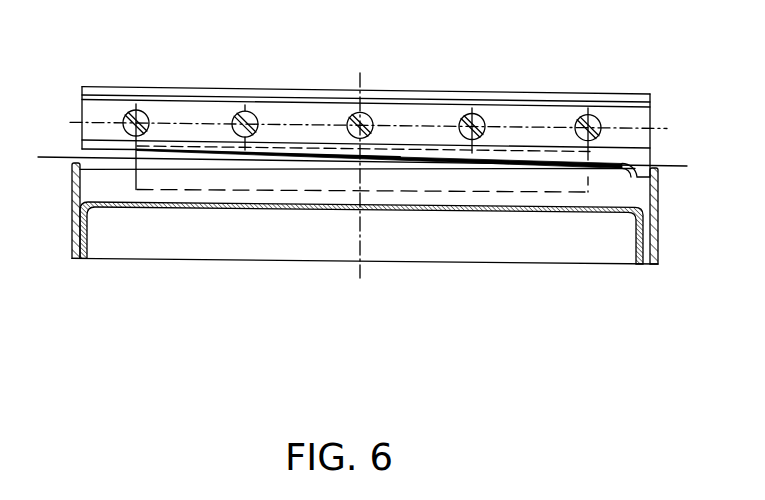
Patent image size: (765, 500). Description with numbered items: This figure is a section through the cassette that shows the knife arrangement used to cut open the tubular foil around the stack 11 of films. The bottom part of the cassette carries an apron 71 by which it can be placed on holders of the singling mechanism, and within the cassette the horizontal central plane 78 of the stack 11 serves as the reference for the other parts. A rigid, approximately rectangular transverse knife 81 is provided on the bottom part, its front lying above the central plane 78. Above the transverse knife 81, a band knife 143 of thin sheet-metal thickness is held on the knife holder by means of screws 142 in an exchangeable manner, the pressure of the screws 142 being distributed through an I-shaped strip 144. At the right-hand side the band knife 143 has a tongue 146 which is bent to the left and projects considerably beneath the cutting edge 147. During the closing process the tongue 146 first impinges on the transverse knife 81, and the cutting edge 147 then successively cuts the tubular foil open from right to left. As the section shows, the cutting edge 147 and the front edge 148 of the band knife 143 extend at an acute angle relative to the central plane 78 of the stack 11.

The stack 11 is at (250, 178).
The apron 71 is at (73, 237).
The horizontal central plane 78 is at (45, 157).
The transverse knife 81 is at (611, 190).
The screws 142 is at (141, 110).
The band knife 143 is at (537, 161).
The I-shaped strip 144 is at (507, 117).
The tongue 146 is at (644, 173).
The cutting edge 147 is at (217, 151).
The front edge 148 is at (333, 168).